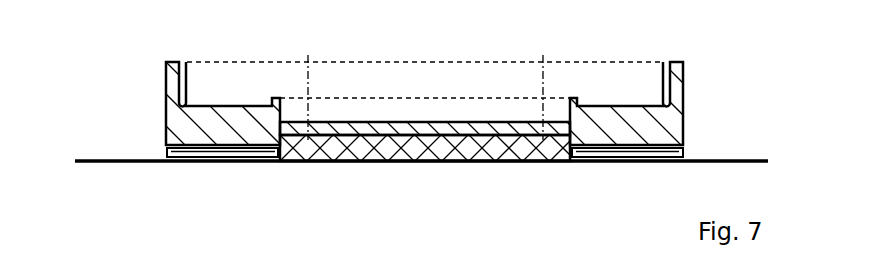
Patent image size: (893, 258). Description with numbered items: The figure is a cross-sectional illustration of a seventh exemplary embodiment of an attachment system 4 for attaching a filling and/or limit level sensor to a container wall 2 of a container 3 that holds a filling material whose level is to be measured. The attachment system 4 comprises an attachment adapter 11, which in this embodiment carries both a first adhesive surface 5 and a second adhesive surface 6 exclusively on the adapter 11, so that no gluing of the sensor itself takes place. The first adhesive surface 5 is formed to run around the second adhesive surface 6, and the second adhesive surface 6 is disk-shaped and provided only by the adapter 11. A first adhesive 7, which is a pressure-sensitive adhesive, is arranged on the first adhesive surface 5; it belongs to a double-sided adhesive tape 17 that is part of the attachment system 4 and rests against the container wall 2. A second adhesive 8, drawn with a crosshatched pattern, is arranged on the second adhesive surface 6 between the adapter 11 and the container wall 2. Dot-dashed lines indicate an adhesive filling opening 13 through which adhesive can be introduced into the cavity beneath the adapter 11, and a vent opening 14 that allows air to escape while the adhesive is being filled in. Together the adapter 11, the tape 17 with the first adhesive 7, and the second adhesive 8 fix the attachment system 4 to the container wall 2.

The container wall 2 is at (92, 165).
The container 3 is at (133, 165).
The attachment system 4 is at (722, 77).
The first adhesive surface 5 is at (185, 153).
The second adhesive surface 6 is at (348, 137).
The first adhesive 7 is at (268, 153).
The second adhesive 8 is at (485, 147).
The attachment adapter 11 is at (180, 132).
The adhesive filling opening 13 is at (307, 77).
The vent opening 14 is at (545, 83).
The double-sided adhesive tape 17 is at (638, 153).